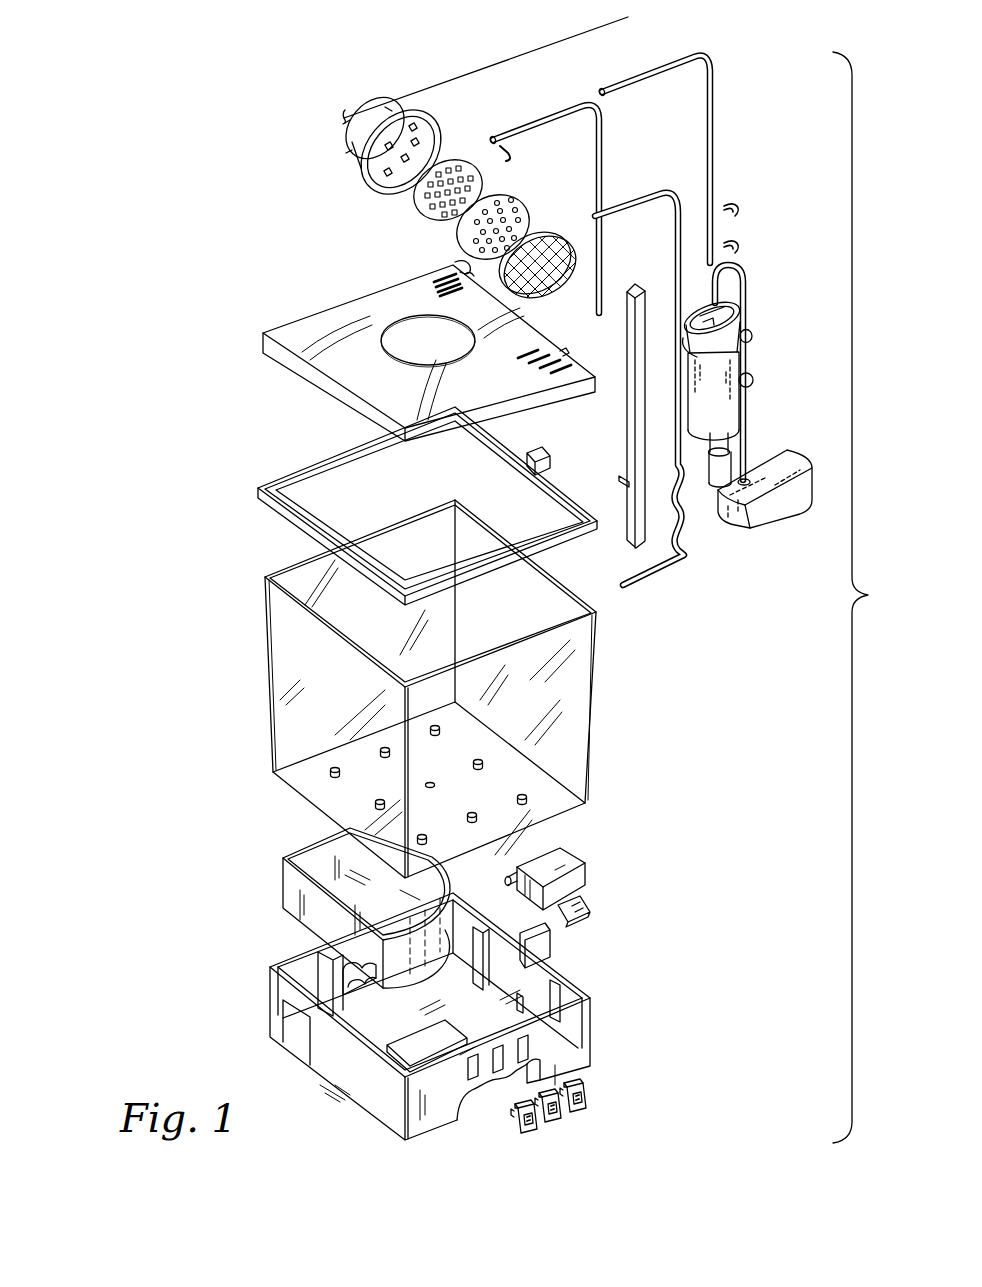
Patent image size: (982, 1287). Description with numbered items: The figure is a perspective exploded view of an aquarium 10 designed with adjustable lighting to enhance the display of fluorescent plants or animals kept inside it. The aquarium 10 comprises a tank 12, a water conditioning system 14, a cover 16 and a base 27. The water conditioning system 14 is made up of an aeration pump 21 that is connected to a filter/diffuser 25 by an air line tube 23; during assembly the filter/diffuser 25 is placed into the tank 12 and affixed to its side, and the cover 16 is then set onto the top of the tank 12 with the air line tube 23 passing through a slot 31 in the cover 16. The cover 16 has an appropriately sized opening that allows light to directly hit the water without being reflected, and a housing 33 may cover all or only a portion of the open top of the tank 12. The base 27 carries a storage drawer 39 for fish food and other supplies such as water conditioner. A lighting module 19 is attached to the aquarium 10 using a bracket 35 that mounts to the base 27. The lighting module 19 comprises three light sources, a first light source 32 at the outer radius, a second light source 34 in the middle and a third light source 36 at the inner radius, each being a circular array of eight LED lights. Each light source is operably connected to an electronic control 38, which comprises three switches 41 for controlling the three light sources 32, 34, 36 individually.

The aquarium 10 is at (156, 726).
The tank 12 is at (593, 728).
The water conditioning system 14 is at (735, 531).
The cover 16 is at (320, 306).
The lighting module 19 is at (426, 86).
The aeration pump 21 is at (787, 461).
The air line tube 23 is at (746, 292).
The filter/diffuser 25 is at (732, 402).
The base 27 is at (312, 1063).
The slot 31 is at (457, 262).
The first light source 32 is at (422, 203).
The housing 33 is at (327, 452).
The second light source 34 is at (466, 162).
The bracket 35 is at (624, 314).
The third light source 36 is at (497, 200).
The electronic control 38 is at (595, 1103).
The storage drawer 39 is at (285, 878).
The switches 41 is at (524, 1135).